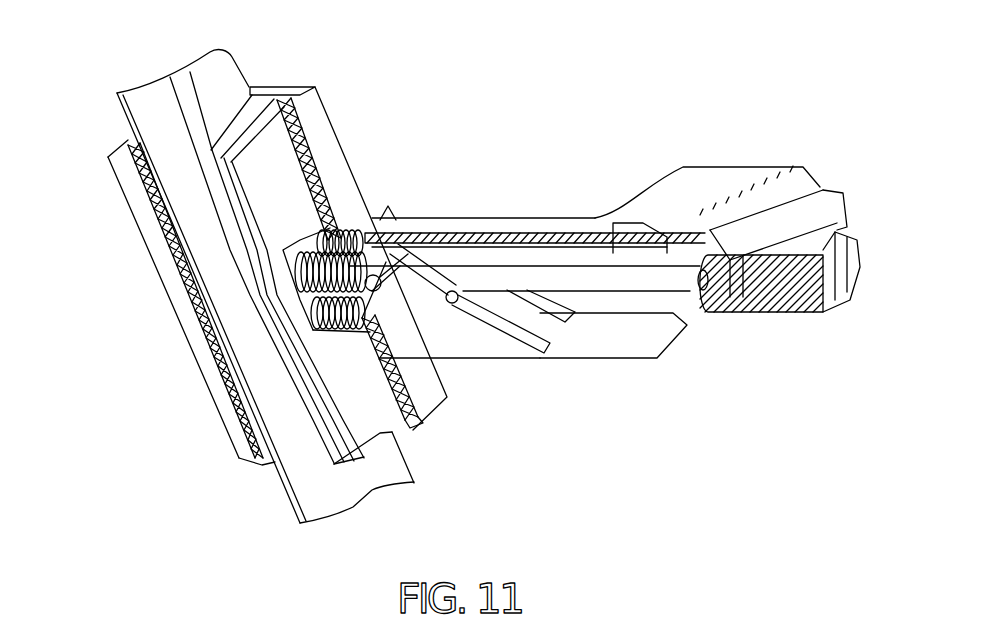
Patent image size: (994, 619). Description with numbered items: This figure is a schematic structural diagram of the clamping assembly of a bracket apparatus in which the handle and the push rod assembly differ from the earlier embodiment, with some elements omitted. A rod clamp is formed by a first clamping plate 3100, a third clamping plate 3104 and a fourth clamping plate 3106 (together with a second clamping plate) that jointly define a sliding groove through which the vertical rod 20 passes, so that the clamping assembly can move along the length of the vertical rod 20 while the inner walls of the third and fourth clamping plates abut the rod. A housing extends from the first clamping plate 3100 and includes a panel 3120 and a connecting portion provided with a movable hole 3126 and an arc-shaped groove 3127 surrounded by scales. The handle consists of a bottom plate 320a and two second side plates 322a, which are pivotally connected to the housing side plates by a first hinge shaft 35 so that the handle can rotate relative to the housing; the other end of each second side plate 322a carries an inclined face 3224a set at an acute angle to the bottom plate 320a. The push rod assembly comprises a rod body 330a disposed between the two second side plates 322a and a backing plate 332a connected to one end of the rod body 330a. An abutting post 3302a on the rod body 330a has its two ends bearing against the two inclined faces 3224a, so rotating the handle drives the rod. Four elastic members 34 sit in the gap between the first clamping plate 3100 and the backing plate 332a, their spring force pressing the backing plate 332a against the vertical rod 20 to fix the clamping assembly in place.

The vertical rod 20 is at (307, 497).
The fourth clamping plate 3106 is at (120, 168).
The third clamping plate 3104 is at (274, 92).
The first clamping plate 3100 is at (310, 130).
The elastic member 34 is at (345, 265).
The first hinge shaft 35 is at (390, 260).
The abutting post 3302a is at (453, 290).
The panel 3120 is at (551, 226).
The rod body 330a is at (650, 283).
The arc-shaped groove 3127 is at (789, 200).
The movable hole 3126 is at (780, 273).
The second side plate 322a is at (455, 347).
The bottom plate 320a is at (637, 338).
The inclined face 3224a is at (512, 330).
The backing plate 332a is at (350, 422).